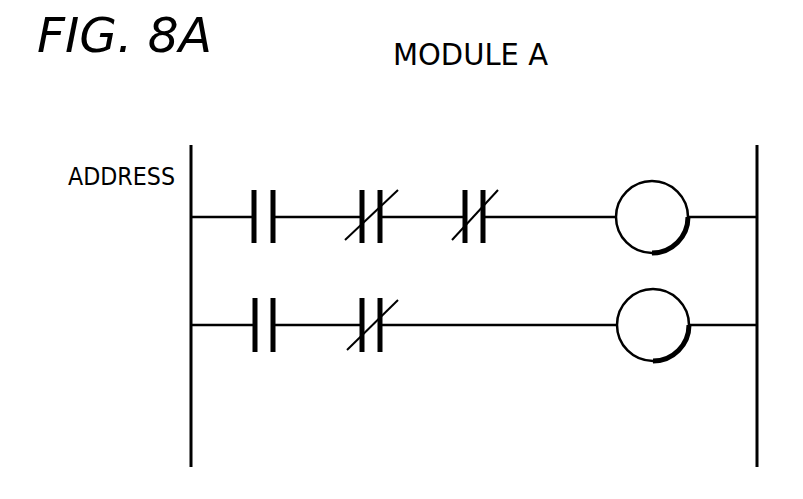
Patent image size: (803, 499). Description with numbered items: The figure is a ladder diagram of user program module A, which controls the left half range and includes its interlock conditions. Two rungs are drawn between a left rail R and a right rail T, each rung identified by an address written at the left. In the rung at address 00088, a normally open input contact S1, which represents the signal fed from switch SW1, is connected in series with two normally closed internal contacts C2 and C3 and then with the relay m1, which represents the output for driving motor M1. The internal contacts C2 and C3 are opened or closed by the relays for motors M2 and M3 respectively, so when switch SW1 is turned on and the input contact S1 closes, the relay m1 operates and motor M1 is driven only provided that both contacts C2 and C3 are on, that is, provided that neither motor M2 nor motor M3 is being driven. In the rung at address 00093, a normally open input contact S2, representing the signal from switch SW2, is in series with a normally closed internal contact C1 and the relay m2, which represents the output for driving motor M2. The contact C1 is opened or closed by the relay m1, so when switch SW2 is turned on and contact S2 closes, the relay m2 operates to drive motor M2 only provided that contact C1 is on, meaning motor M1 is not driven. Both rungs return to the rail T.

The left power rail R is at (187, 286).
The right power rail T is at (756, 285).
The address 00088 is at (417, 218).
The address 00093 is at (413, 327).
The input contact S1 is at (261, 198).
The internal contact C2 is at (371, 197).
The internal contact C3 is at (475, 197).
The relay m1 is at (652, 217).
The input contact S2 is at (266, 306).
The internal contact C1 is at (372, 306).
The relay m2 is at (653, 325).